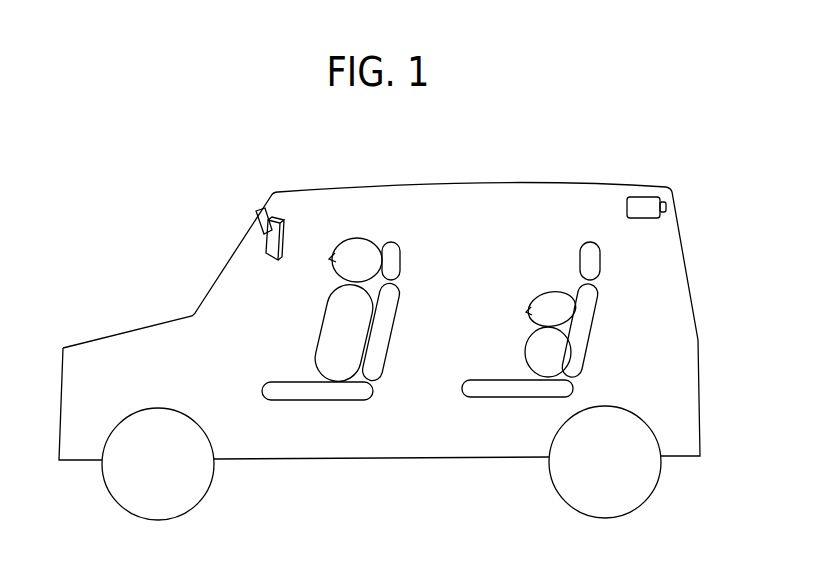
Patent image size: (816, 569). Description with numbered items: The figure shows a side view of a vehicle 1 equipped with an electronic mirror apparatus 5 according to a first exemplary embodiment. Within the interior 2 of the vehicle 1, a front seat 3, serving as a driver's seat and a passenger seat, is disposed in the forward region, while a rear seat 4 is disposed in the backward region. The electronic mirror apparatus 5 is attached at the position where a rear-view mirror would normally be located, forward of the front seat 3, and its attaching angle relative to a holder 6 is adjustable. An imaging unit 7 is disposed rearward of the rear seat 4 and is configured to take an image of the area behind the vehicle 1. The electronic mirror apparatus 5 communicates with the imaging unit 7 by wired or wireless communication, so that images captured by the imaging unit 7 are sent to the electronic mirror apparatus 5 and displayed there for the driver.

The vehicle 1 is at (412, 183).
The interior 2 is at (497, 185).
The front seat 3 is at (318, 393).
The rear seat 4 is at (507, 394).
The electronic mirror apparatus 5 is at (298, 192).
The holder 6 is at (262, 214).
The imaging unit 7 is at (640, 197).